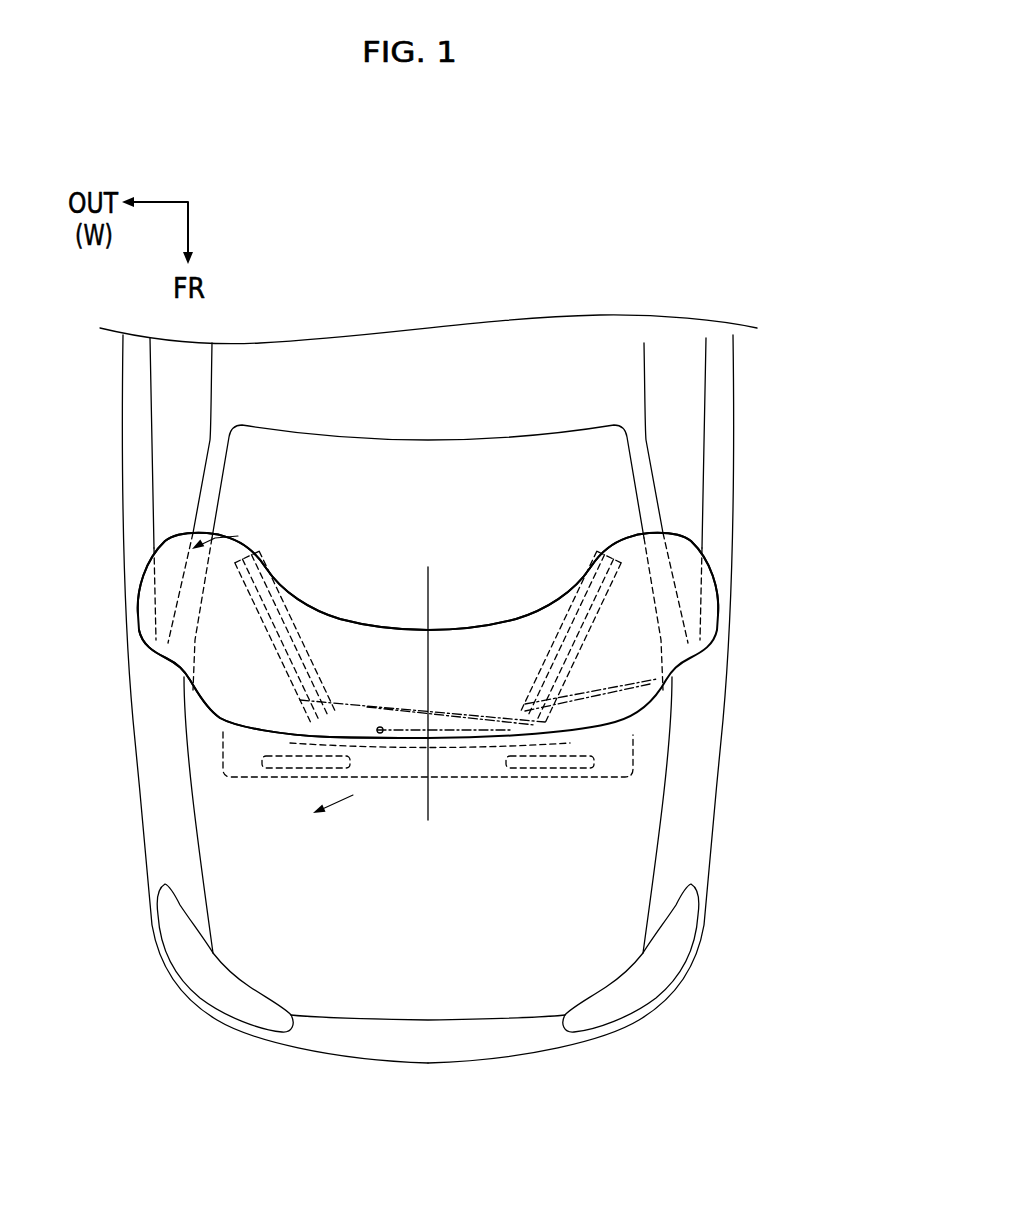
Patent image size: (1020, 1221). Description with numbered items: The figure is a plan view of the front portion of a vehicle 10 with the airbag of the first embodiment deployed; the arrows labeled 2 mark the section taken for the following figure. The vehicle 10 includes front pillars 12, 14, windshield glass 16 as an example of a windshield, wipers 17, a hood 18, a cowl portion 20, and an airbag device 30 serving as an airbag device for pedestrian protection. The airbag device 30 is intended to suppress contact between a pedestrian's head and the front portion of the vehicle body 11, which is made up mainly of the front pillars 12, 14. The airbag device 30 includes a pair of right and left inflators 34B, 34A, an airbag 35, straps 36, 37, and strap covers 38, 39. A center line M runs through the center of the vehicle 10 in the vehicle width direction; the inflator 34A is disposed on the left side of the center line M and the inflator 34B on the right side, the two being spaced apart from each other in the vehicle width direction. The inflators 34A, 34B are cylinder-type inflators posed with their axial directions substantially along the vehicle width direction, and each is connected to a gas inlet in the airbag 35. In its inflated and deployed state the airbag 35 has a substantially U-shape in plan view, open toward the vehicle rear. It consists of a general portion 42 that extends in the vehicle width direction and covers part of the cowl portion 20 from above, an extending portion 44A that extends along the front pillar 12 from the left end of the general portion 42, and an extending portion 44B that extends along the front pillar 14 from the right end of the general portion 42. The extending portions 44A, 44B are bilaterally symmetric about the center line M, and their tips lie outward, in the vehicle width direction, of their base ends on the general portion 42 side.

The section line of FIG. 2 is at (263, 685).
The vehicle 10 is at (684, 272).
The vehicle body 11 is at (488, 338).
The front pillar 12 is at (214, 478).
The front pillar 14 is at (641, 480).
The windshield glass 16 is at (422, 455).
The wipers 17 is at (513, 720).
The hood 18 is at (588, 800).
The cowl portion 20 is at (402, 792).
The airbag device 30 is at (321, 587).
The inflator 34A is at (287, 770).
The inflator 34B is at (548, 773).
The airbag 35 is at (390, 613).
The strap 36 is at (285, 600).
The strap 37 is at (573, 592).
The strap cover 38 is at (303, 632).
The strap cover 39 is at (557, 632).
The general portion 42 is at (270, 717).
The extending portion 44A is at (170, 567).
The extending portion 44B is at (687, 565).
The center line M is at (433, 587).